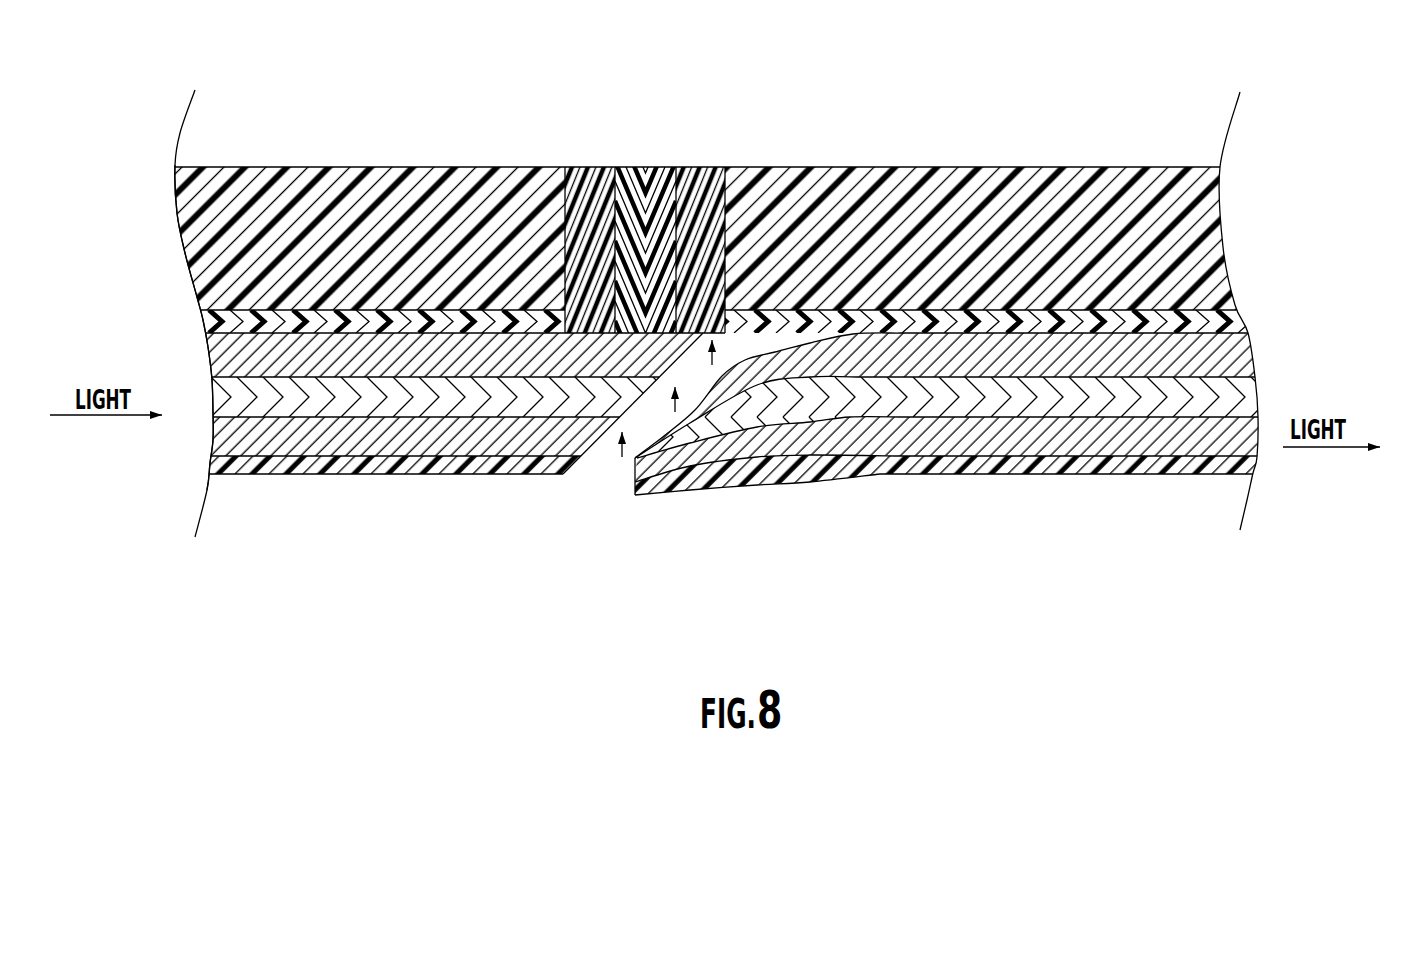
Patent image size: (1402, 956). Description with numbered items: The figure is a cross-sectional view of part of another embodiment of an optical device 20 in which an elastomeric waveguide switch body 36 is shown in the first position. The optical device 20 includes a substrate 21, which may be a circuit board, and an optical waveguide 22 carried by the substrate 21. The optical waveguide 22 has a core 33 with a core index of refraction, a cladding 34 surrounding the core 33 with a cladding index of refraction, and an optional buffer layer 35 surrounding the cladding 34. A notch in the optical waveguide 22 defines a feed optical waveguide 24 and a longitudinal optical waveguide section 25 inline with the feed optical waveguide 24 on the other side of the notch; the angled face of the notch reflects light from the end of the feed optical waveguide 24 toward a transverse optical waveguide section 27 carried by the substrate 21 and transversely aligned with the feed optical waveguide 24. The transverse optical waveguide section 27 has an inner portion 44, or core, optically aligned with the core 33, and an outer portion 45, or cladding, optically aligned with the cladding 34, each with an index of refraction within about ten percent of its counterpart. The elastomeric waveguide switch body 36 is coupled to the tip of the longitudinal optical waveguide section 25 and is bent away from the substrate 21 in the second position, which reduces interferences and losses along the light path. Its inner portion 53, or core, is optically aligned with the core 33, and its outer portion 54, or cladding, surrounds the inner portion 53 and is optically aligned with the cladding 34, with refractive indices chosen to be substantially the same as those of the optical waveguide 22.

The optical device 20 is at (532, 97).
The substrate 21 is at (352, 190).
The optical waveguide 22 is at (192, 383).
The feed optical waveguide 24 is at (333, 473).
The longitudinal optical waveguide section 25 is at (1012, 476).
The transverse optical waveguide section 27 is at (668, 141).
The core 33 is at (1237, 395).
The cladding 34 is at (1238, 353).
The buffer layer 35 is at (1233, 320).
The elastomeric waveguide switch body 36 is at (645, 504).
The transverse optical waveguide section inner portion 44 is at (630, 182).
The transverse optical waveguide section outer portion 45 is at (583, 177).
The inner portion 53 is at (692, 435).
The outer portion 54 is at (647, 471).